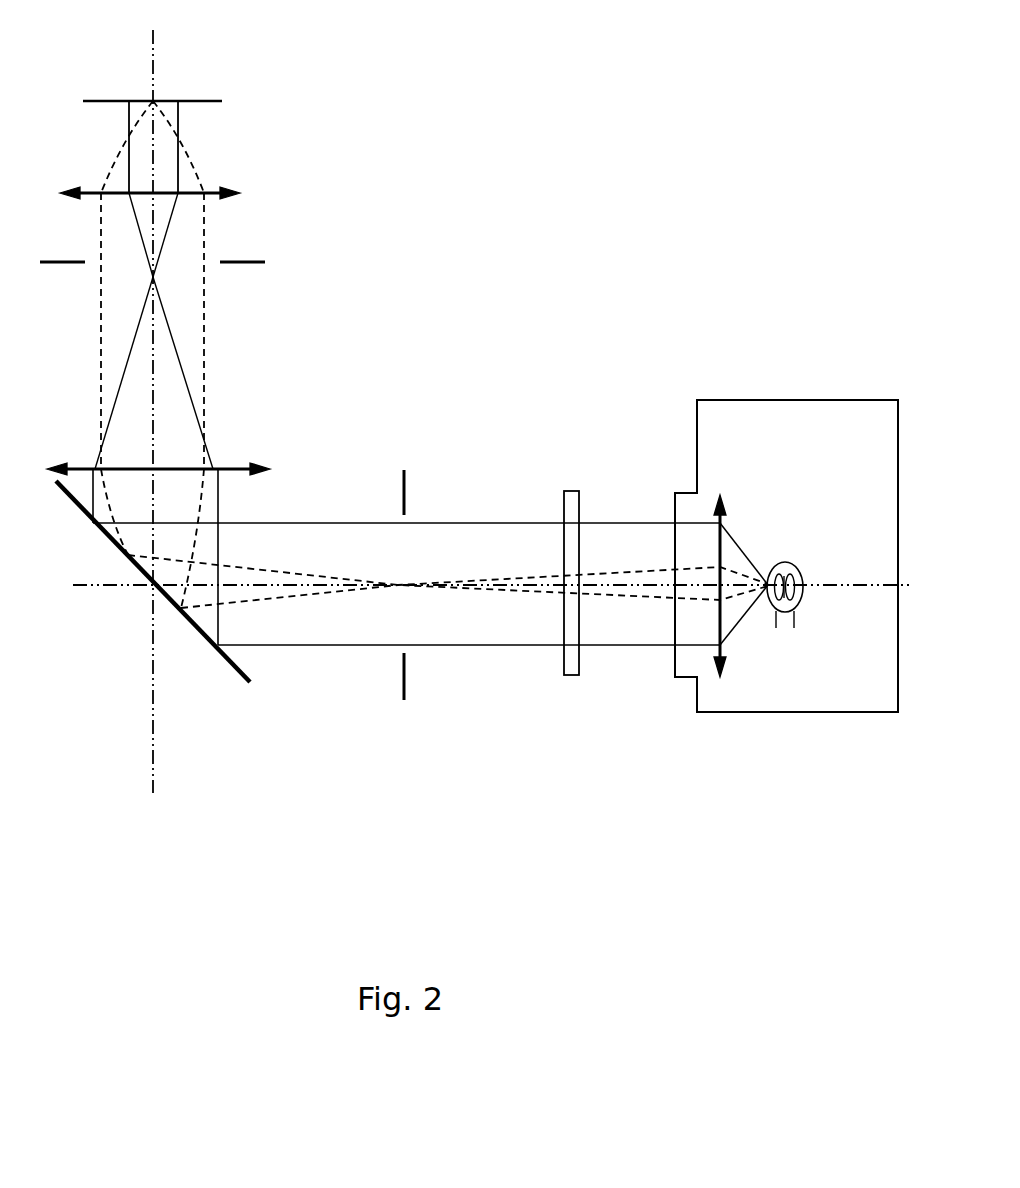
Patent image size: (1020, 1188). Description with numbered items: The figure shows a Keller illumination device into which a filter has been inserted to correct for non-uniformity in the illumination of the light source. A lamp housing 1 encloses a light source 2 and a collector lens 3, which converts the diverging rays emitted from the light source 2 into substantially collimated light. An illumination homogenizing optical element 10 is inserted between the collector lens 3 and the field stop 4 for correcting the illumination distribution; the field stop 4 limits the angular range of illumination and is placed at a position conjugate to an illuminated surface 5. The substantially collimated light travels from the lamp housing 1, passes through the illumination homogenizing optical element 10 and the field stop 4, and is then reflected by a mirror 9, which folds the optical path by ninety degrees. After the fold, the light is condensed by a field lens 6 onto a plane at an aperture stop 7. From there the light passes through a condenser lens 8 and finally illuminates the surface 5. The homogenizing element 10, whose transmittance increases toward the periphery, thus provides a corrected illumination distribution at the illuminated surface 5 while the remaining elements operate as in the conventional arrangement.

The lamp housing 1 is at (792, 398).
The light source 2 is at (785, 560).
The collector lens 3 is at (727, 505).
The field stop 4 is at (408, 492).
The illuminated surface 5 is at (190, 100).
The field lens 6 is at (240, 462).
The aperture stop 7 is at (245, 258).
The condenser lens 8 is at (220, 190).
The mirror 9 is at (218, 660).
The illumination homogenizing optical element 10 is at (568, 492).